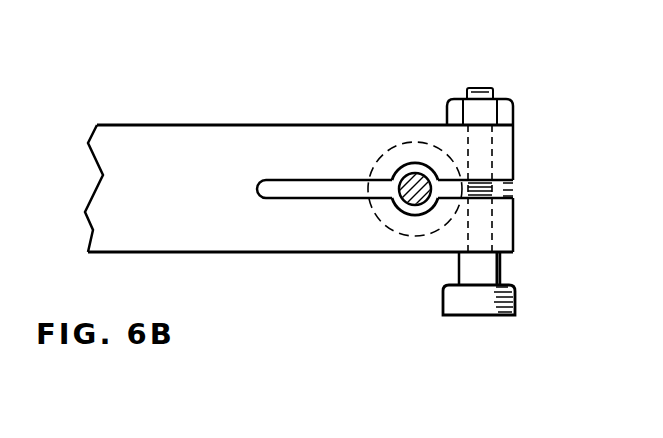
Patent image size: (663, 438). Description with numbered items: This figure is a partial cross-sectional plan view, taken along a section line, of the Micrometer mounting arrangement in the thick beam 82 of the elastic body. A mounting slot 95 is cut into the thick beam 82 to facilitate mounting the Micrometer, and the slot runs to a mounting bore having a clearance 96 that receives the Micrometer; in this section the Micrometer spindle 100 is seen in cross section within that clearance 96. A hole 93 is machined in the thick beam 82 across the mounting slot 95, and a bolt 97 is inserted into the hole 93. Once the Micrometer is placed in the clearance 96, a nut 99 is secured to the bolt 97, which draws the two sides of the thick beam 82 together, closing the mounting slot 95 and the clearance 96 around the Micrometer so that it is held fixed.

The thick beam 82 is at (223, 137).
The Micrometer spindle 100 is at (404, 178).
The clearance 96 is at (404, 178).
The hole 93 is at (491, 141).
The mounting slot 95 is at (503, 189).
The nut 99 is at (508, 104).
The bolt 97 is at (513, 286).